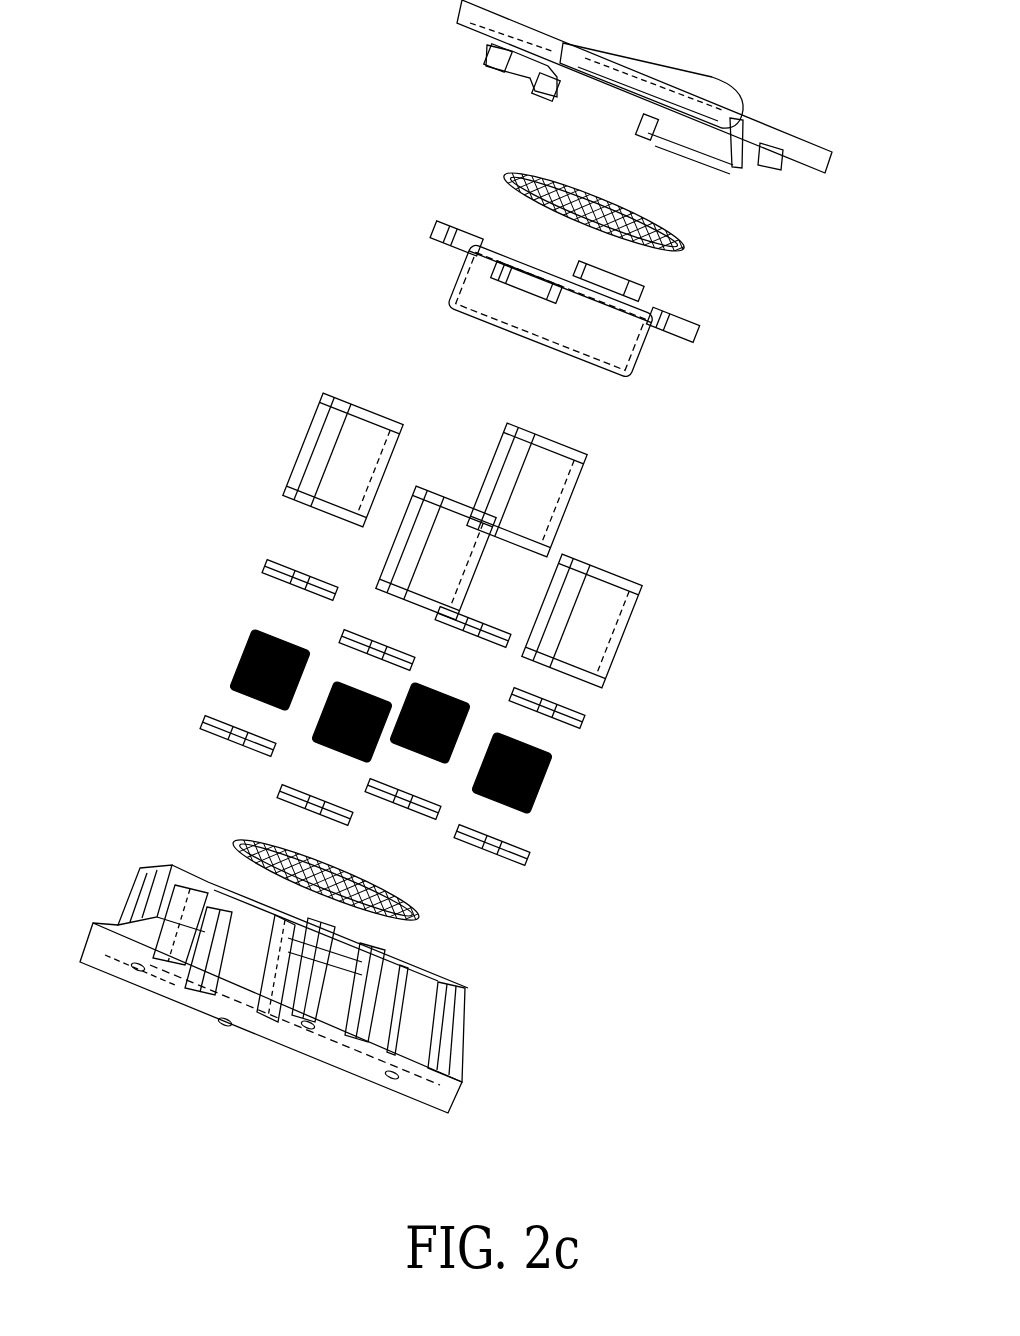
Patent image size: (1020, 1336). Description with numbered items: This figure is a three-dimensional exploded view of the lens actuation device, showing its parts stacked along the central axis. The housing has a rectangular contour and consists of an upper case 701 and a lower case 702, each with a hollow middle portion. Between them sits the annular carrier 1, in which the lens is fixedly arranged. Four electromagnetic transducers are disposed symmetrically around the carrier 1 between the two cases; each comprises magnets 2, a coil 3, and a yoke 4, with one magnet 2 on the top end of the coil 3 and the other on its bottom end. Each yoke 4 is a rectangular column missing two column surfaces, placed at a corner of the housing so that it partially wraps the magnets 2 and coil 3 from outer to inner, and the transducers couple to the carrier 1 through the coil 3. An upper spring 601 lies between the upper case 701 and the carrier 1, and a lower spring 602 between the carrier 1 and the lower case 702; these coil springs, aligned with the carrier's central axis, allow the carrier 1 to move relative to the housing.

The upper case 701 is at (477, 38).
The upper spring 601 is at (480, 168).
The carrier 1 is at (440, 286).
The yoke 4 is at (590, 472).
The magnets 2 is at (534, 845).
The coil 3 is at (227, 643).
The lower spring 602 is at (425, 912).
The lower case 702 is at (468, 1098).